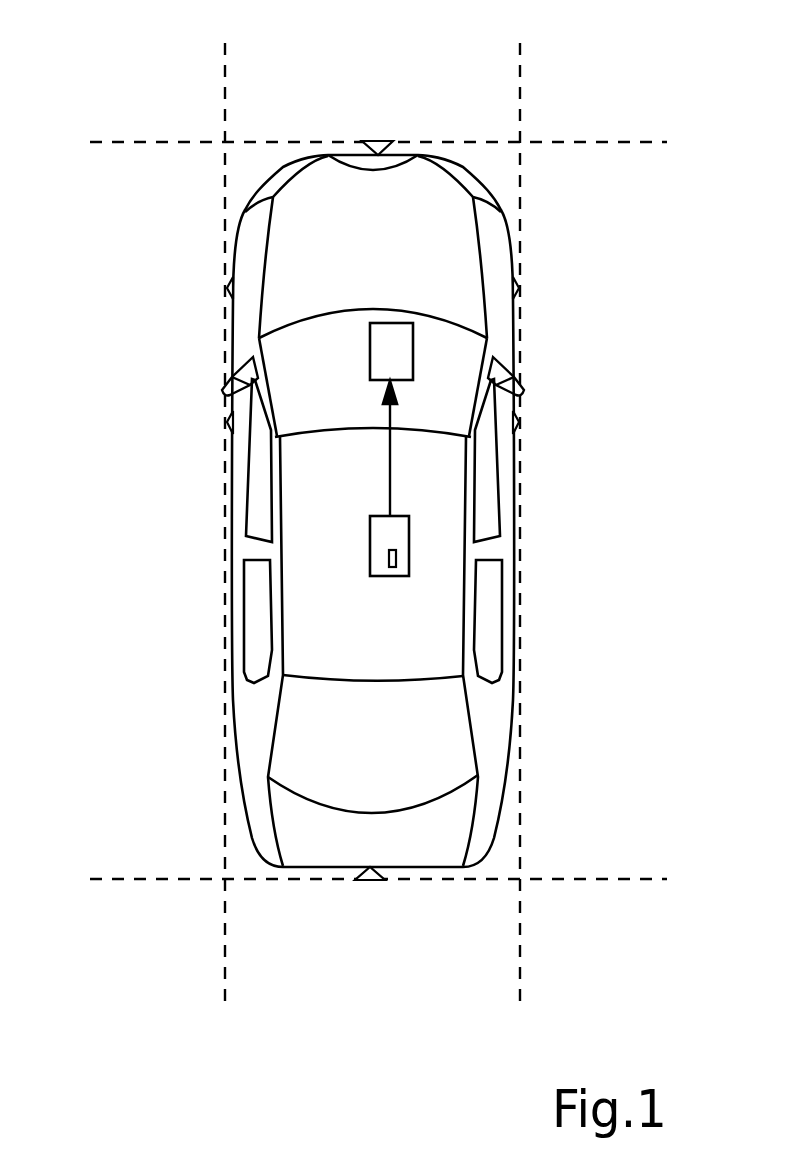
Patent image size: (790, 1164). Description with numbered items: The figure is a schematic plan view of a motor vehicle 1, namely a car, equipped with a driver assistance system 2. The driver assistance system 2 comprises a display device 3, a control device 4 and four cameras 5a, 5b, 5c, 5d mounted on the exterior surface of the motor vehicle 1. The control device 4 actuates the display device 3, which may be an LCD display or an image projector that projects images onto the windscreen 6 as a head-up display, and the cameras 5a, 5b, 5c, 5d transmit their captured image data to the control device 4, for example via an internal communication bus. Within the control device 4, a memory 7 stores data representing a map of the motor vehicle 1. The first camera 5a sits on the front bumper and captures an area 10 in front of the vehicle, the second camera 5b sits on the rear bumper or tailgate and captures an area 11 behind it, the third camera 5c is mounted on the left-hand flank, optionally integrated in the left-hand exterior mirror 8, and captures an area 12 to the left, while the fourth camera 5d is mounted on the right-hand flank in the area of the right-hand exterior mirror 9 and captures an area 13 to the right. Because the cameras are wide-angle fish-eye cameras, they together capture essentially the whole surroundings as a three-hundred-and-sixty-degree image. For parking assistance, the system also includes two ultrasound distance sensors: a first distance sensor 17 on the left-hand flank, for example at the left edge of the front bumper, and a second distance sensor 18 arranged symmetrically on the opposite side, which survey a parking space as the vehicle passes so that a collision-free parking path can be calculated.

The motor vehicle 1 is at (462, 230).
The driver assistance system 2 is at (315, 632).
The display device 3 is at (368, 360).
The control device 4 is at (370, 540).
The first camera 5a is at (380, 138).
The second camera 5b is at (370, 880).
The third camera 5c is at (229, 423).
The fourth camera 5d is at (520, 422).
The windscreen 6 is at (298, 389).
The memory 7 is at (397, 551).
The left-hand exterior mirror 8 is at (231, 379).
The right-hand exterior mirror 9 is at (514, 374).
The area in front of the motor vehicle 10 is at (131, 43).
The area behind the motor vehicle 11 is at (123, 1005).
The area to the left of the motor vehicle 12 is at (108, 108).
The area to the right of the motor vehicle 13 is at (675, 120).
The first distance sensor 17 is at (229, 287).
The second distance sensor 18 is at (519, 288).